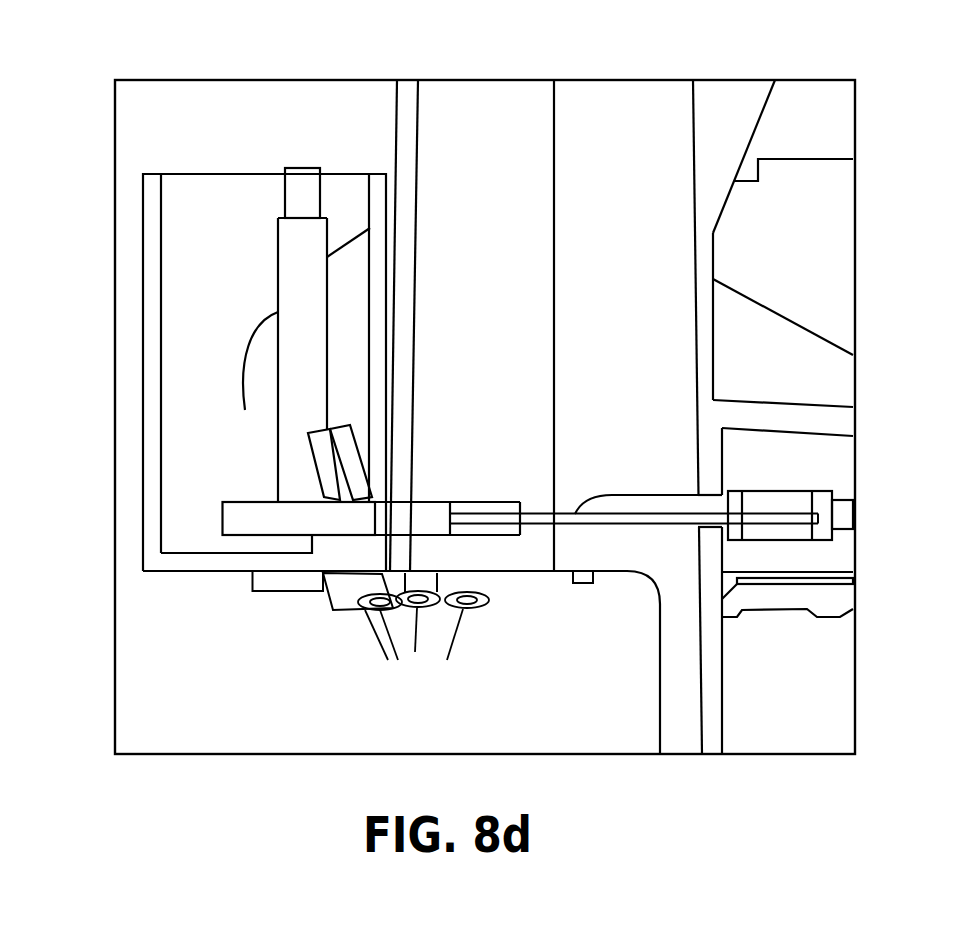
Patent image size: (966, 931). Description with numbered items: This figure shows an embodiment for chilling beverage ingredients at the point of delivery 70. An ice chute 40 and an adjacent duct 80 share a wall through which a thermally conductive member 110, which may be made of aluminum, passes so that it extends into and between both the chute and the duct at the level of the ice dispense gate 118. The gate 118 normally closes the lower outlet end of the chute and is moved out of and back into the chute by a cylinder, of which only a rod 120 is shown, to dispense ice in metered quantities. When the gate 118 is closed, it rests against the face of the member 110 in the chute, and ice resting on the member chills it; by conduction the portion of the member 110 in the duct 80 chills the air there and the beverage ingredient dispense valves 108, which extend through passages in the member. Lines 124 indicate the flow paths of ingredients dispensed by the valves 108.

The ice chute 40 is at (483, 113).
The duct 80 is at (128, 257).
The point of delivery 70 is at (175, 383).
The thermally conductive member 110 is at (245, 522).
The beverage ingredient dispense valves 108 is at (343, 590).
The lines 124 is at (453, 638).
The ice dispense gate 118 is at (570, 518).
The rod 120 is at (847, 513).